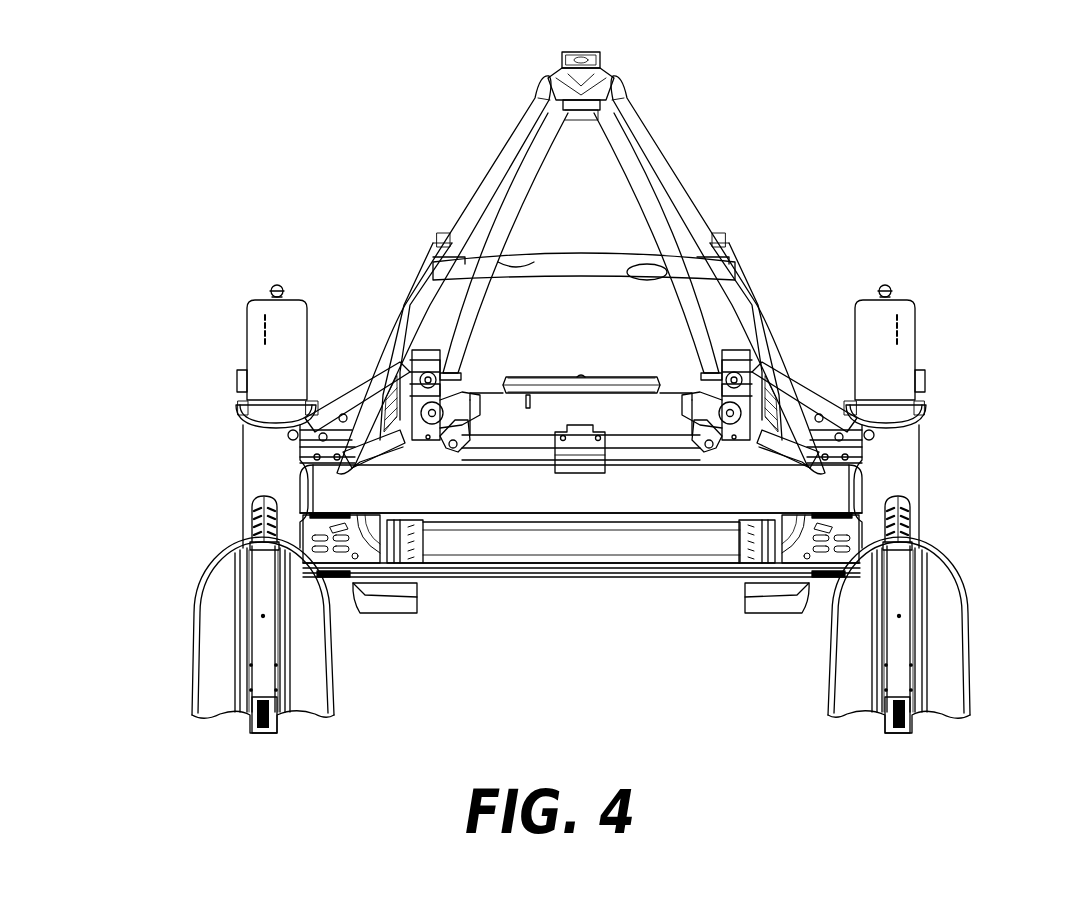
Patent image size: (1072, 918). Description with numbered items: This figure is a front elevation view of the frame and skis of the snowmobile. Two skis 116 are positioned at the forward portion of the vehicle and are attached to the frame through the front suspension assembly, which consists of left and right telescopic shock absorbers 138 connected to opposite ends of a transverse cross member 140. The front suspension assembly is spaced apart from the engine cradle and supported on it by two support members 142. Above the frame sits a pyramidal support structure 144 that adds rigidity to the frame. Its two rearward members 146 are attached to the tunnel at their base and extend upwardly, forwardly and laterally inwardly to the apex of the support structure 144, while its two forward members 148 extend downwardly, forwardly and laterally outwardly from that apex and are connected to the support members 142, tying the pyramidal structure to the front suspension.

The ski 116 is at (217, 654).
The telescopic shock absorber 138 is at (273, 446).
The transverse cross member 140 is at (514, 492).
The support member 142 is at (405, 336).
The pyramidal support structure 144 is at (312, 136).
The rearward member 146 is at (633, 193).
The forward member 148 is at (495, 181).